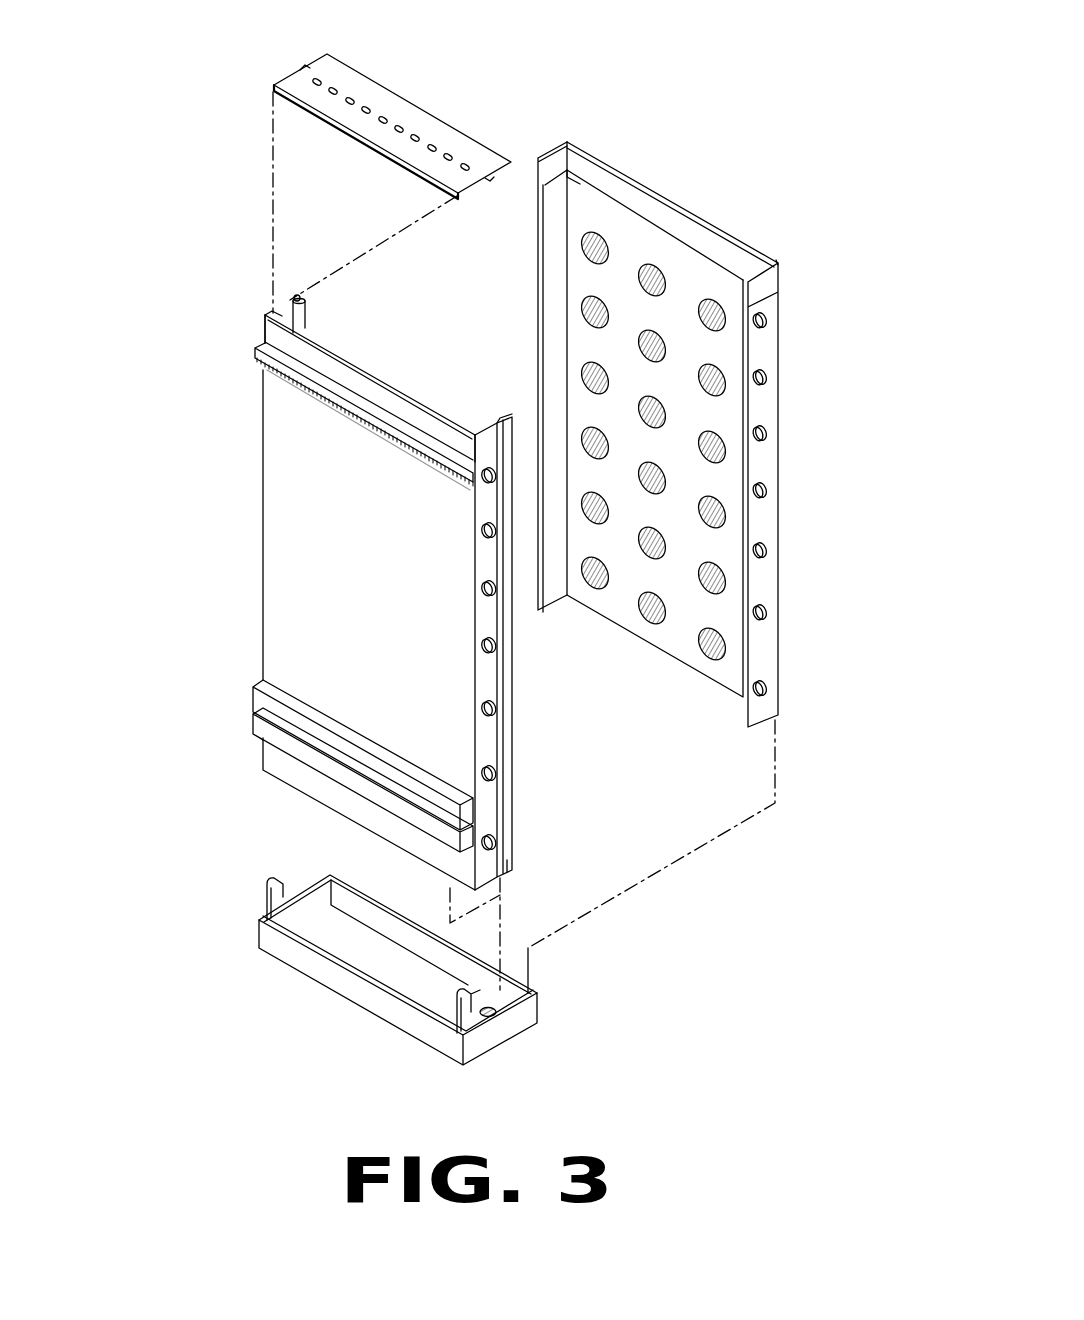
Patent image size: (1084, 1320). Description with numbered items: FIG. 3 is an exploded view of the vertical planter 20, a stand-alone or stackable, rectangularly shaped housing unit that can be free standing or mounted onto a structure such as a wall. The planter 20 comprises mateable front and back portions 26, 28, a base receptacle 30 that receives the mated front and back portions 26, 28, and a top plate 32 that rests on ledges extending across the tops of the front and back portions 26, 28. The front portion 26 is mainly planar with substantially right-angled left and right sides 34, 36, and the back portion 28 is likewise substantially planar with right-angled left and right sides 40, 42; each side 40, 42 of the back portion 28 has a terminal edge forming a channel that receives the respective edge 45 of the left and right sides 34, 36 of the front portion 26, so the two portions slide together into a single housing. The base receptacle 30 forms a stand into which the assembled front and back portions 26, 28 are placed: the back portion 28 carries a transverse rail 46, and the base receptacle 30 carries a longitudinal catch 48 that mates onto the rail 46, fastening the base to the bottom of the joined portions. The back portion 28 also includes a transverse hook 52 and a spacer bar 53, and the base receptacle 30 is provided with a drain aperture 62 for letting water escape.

The vertical planter 20 is at (777, 198).
The front portion 26 is at (663, 192).
The back portion 28 is at (255, 535).
The base receptacle 30 is at (357, 1012).
The top plate 32 is at (410, 120).
The left side of front portion 34 is at (765, 460).
The right side of front portion 36 is at (553, 335).
The left side of back portion 40 is at (490, 818).
The right side of back portion 42 is at (283, 313).
The edge of left and right sides 45 is at (538, 270).
The transverse rail 46 is at (255, 735).
The longitudinal catch 48 is at (275, 888).
The transverse hook 52 is at (253, 357).
The spacer bar 53 is at (255, 692).
The drain aperture 62 is at (490, 1016).